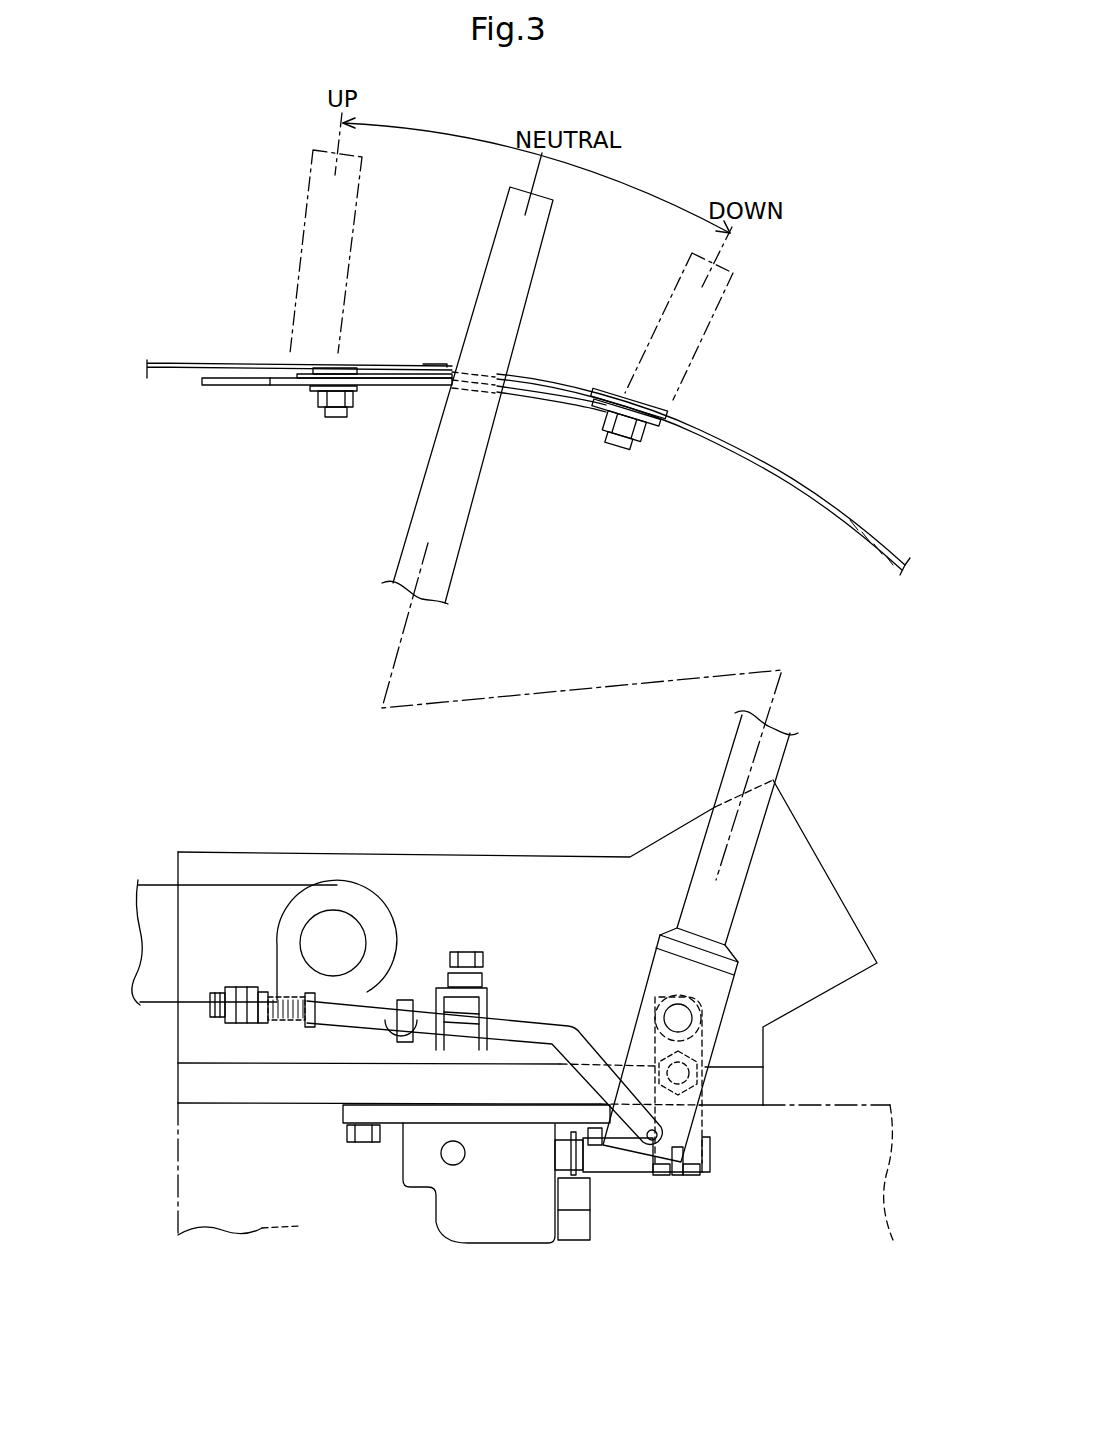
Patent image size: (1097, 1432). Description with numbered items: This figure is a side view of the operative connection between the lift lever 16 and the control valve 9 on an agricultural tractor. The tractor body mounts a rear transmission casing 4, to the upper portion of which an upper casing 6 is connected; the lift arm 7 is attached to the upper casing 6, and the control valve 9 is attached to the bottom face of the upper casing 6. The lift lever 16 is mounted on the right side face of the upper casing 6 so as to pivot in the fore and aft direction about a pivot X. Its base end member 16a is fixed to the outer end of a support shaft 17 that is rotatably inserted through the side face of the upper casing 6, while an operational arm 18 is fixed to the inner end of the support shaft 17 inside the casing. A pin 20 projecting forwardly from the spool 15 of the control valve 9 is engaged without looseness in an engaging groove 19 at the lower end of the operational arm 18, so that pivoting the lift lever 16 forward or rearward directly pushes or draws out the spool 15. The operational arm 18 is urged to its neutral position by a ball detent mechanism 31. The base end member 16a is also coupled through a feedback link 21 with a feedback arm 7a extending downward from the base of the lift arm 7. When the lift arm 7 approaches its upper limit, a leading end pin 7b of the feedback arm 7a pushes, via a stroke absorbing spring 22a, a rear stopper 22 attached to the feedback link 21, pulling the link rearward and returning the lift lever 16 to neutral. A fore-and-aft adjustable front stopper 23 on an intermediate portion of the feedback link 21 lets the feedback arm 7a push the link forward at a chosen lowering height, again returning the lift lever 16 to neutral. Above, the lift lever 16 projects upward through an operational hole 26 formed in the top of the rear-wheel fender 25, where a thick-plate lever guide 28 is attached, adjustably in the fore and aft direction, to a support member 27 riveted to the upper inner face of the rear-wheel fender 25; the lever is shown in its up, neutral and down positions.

The rear transmission casing 4 is at (843, 1103).
The upper casing 6 is at (542, 870).
The lift arm 7 is at (232, 892).
The feedback arm 7a is at (403, 1003).
The leading end pin 7b is at (387, 1017).
The control valve 9 is at (430, 1202).
The spool 15 is at (617, 1168).
The lift lever 16 is at (497, 250).
The base end member 16a is at (722, 982).
The support shaft 17 is at (662, 1020).
The operational arm 18 is at (697, 1123).
The engaging groove 19 is at (677, 1172).
The pin 20 is at (683, 1157).
The feedback link 21 is at (553, 1028).
The rear stopper 22 is at (235, 992).
The stroke absorbing spring 22a is at (267, 1025).
The front stopper 23 is at (495, 1000).
The rear-wheel fender 25 is at (195, 363).
The operational hole 26 is at (762, 457).
The support member 27 is at (587, 397).
The lever guide 28 is at (243, 388).
The ball detent mechanism 31 is at (707, 1086).
The pivot X is at (675, 1015).